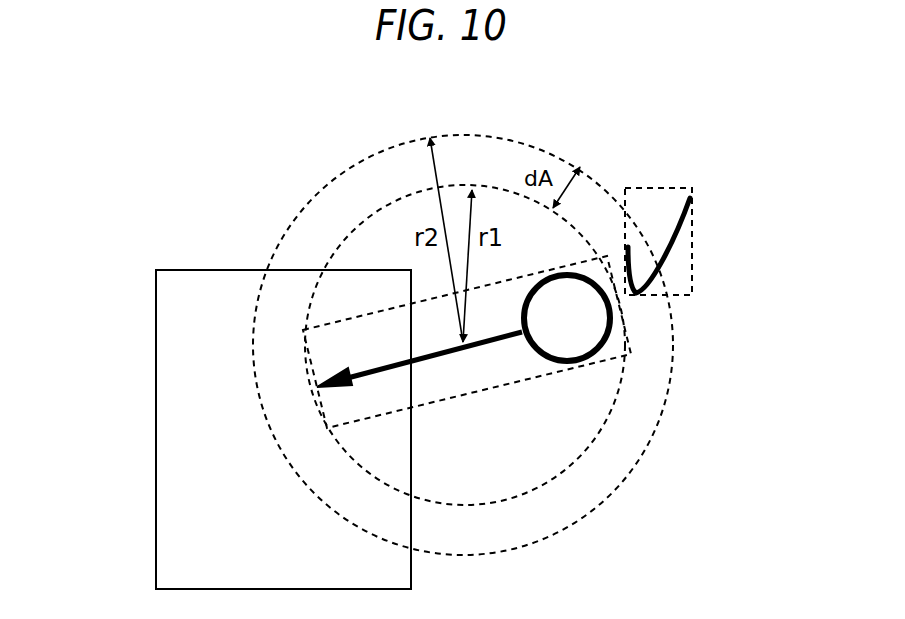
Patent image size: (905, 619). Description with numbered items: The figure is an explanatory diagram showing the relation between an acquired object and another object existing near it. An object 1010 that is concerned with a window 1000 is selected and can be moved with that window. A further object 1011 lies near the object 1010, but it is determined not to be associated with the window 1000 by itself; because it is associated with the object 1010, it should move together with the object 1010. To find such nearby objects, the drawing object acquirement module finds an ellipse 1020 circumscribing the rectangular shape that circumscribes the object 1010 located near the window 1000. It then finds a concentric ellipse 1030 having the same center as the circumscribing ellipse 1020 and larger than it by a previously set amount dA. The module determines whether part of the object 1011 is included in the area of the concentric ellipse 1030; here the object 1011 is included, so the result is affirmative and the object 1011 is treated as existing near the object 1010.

The window 1000 is at (155, 350).
The object 1010 is at (612, 337).
The object 1011 is at (677, 242).
The ellipse 1020 is at (352, 230).
The concentric ellipse 1030 is at (367, 156).